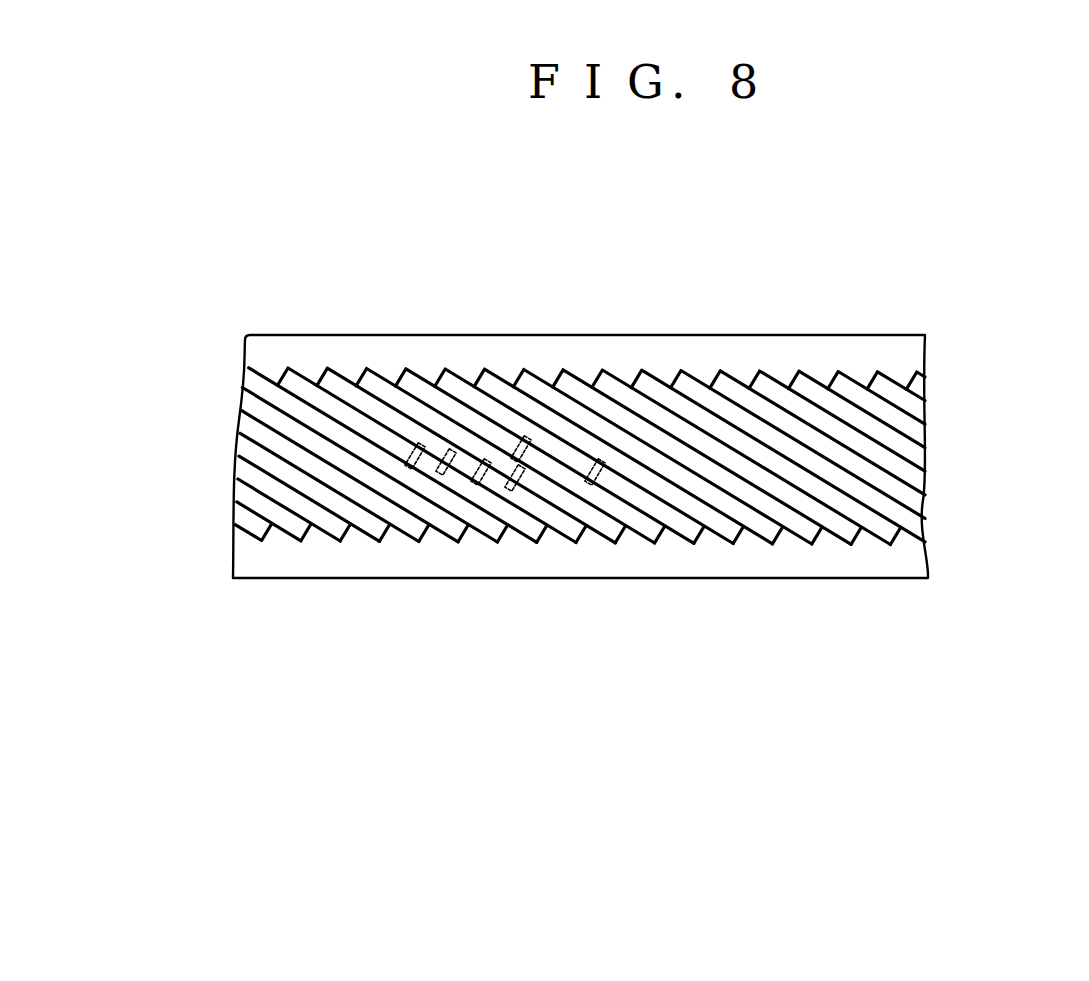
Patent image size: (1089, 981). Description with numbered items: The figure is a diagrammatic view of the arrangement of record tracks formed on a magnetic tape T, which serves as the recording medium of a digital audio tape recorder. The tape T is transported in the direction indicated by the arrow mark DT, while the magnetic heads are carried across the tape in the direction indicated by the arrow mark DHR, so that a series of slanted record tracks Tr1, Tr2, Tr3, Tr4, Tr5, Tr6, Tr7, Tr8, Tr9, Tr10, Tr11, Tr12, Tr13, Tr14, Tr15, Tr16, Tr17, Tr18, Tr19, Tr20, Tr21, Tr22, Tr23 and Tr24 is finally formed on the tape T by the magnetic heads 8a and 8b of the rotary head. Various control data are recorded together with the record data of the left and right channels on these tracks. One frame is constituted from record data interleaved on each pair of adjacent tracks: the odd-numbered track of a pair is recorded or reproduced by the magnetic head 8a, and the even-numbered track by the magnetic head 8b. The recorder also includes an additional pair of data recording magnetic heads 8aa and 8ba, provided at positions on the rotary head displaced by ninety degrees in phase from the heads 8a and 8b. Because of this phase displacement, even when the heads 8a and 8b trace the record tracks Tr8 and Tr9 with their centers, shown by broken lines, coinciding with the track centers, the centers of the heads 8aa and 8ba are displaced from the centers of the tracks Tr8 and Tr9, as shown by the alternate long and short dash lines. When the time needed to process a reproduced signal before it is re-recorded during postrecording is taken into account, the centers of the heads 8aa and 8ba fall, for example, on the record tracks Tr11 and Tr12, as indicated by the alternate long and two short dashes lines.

The magnetic tape T is at (250, 348).
The record track Tr1 is at (250, 522).
The record track Tr2 is at (290, 525).
The record track Tr3 is at (333, 525).
The record track Tr4 is at (372, 523).
The record track Tr5 is at (410, 527).
The record track Tr6 is at (448, 525).
The record track Tr7 is at (492, 528).
The record track Tr8 is at (533, 528).
The record track Tr9 is at (578, 530).
The record track Tr10 is at (622, 532).
The record track Tr11 is at (660, 528).
The record track Tr12 is at (707, 532).
The record track Tr13 is at (748, 532).
The record track Tr14 is at (785, 535).
The record track Tr15 is at (748, 495).
The record track Tr16 is at (773, 487).
The record track Tr17 is at (803, 482).
The record track Tr18 is at (903, 520).
The record track Tr19 is at (910, 502).
The record track Tr20 is at (903, 475).
The record track Tr21 is at (907, 454).
The record track Tr22 is at (908, 431).
The record track Tr23 is at (913, 406).
The record track Tr24 is at (917, 375).
The magnetic head 8a is at (413, 443).
The data recording magnetic head 8aa is at (523, 436).
The magnetic head 8b is at (483, 459).
The data recording magnetic head 8ba is at (598, 459).
The direction of transportation of the magnetic tape DT is at (365, 282).
The direction of transportation of the magnetic heads DHR is at (637, 628).